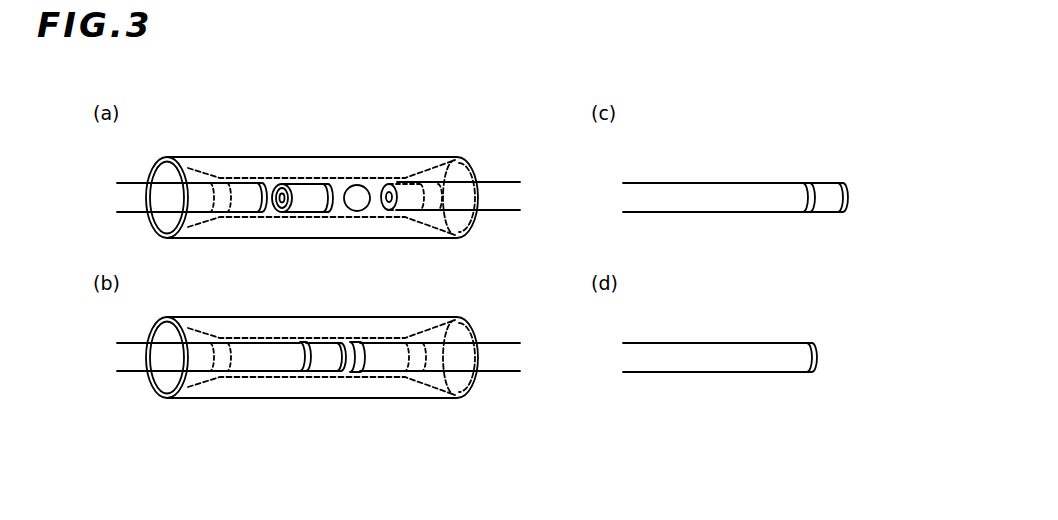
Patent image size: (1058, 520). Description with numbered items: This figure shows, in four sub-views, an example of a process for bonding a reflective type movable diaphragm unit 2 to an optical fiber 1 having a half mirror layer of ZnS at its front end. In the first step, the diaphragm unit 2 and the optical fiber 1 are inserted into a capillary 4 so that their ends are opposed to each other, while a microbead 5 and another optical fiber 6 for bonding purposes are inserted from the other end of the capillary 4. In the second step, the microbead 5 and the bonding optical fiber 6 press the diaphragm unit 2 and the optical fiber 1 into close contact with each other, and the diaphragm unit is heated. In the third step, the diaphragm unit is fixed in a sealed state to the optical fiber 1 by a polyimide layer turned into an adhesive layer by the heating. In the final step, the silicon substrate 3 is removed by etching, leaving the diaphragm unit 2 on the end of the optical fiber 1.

The optical fiber 1 is at (127, 190).
The reflective type movable diaphragm unit 2 is at (283, 200).
The silicon substrate 3 is at (305, 193).
The capillary 4 is at (220, 162).
The microbead 5 is at (357, 192).
The bonding optical fiber 6 is at (488, 195).